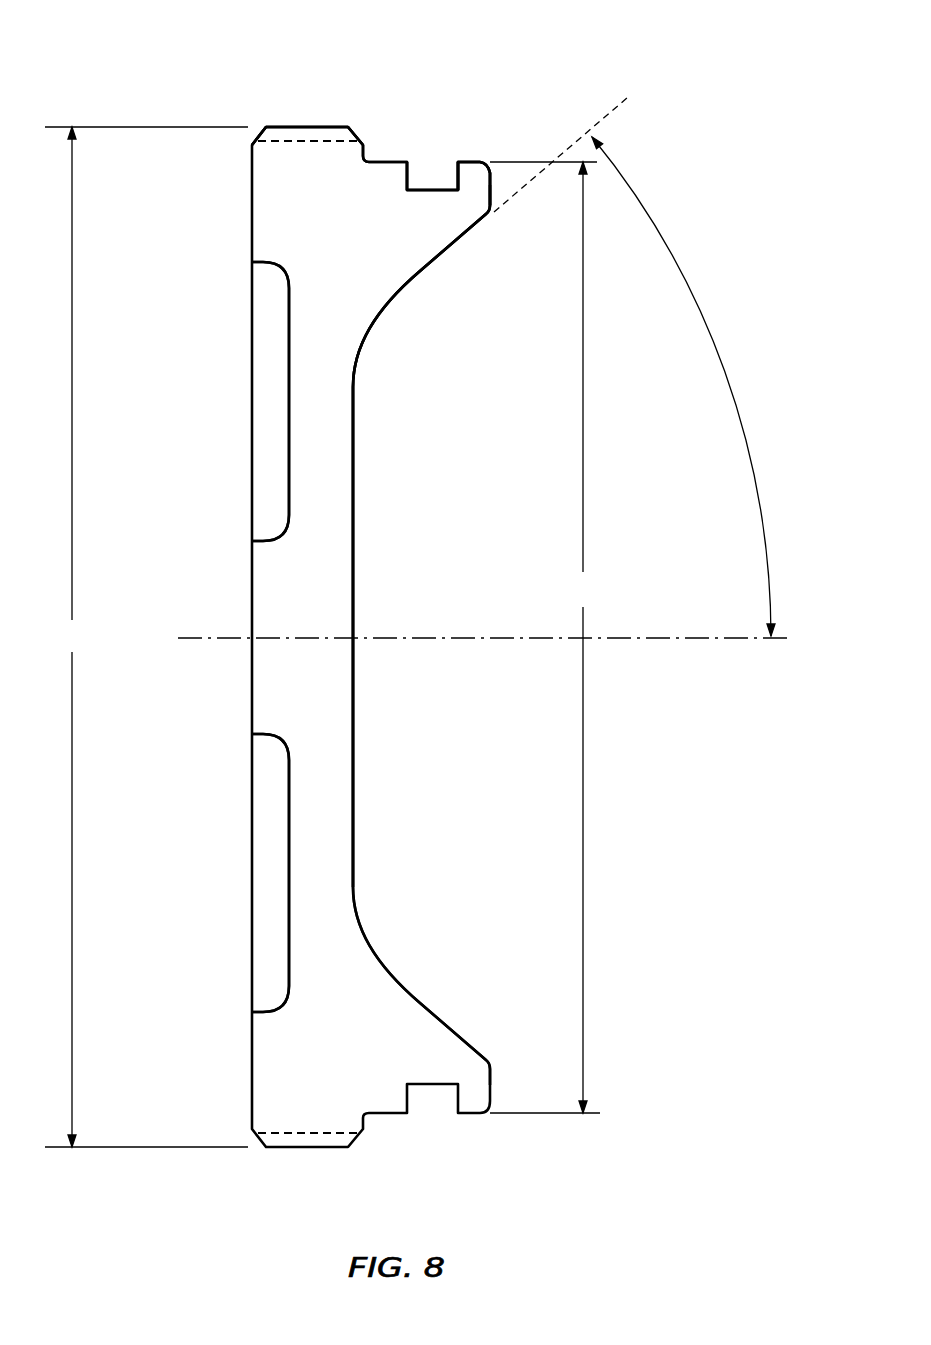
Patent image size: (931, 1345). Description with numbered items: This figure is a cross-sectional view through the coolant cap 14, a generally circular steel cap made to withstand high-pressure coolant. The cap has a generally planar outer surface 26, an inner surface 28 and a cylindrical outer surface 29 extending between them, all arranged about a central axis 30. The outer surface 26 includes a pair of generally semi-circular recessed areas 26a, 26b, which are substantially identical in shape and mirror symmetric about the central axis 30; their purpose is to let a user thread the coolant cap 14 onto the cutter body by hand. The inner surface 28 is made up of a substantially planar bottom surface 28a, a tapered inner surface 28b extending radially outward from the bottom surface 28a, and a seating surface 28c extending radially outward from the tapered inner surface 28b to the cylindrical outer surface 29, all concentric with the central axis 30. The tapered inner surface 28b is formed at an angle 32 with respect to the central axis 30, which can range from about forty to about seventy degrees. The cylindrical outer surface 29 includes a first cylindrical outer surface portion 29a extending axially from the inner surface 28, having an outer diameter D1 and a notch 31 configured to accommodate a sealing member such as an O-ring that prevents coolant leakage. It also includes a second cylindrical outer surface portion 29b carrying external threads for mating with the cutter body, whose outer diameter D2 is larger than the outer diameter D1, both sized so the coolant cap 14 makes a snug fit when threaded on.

The coolant cap 14 is at (186, 98).
The outer surface 26 is at (206, 573).
The recessed area 26a is at (267, 400).
The recessed area 26b is at (267, 908).
The inner surface 28 is at (398, 511).
The bottom surface 28a is at (355, 413).
The tapered inner surface 28b is at (420, 270).
The seating surface 28c is at (492, 185).
The cylindrical outer surface 29 is at (340, 102).
The first cylindrical outer surface portion 29a is at (468, 160).
The second cylindrical outer surface portion 29b is at (302, 127).
The central axis 30 is at (418, 639).
The notch 31 is at (424, 188).
The angle 32 is at (634, 367).
The outer diameter D1 is at (545, 637).
The outer diameter D2 is at (146, 637).